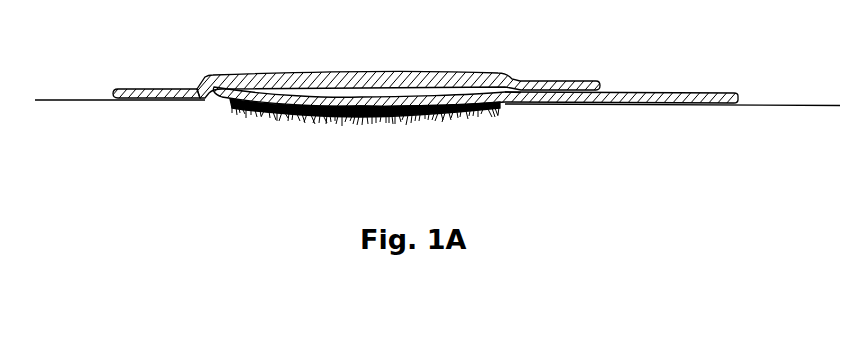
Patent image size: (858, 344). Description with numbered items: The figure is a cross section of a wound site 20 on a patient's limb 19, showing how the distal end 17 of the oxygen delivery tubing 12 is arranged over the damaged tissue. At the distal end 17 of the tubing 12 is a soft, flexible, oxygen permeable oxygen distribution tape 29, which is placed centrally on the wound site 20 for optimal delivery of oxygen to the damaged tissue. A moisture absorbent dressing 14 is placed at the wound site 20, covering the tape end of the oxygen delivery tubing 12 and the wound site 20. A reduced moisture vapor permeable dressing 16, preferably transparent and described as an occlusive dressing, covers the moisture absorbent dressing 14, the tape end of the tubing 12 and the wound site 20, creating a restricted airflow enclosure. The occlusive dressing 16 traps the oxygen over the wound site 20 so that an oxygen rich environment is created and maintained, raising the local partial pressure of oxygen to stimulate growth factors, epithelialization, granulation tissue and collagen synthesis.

The oxygen delivery tubing 12 is at (705, 93).
The moisture absorbent dressing 14 is at (505, 73).
The reduced moisture vapor permeable dressing 16 is at (165, 89).
The distal end 17 is at (500, 98).
The patient's limb 19 is at (747, 106).
The wound site 20 is at (442, 125).
The oxygen distribution tape 29 is at (260, 111).